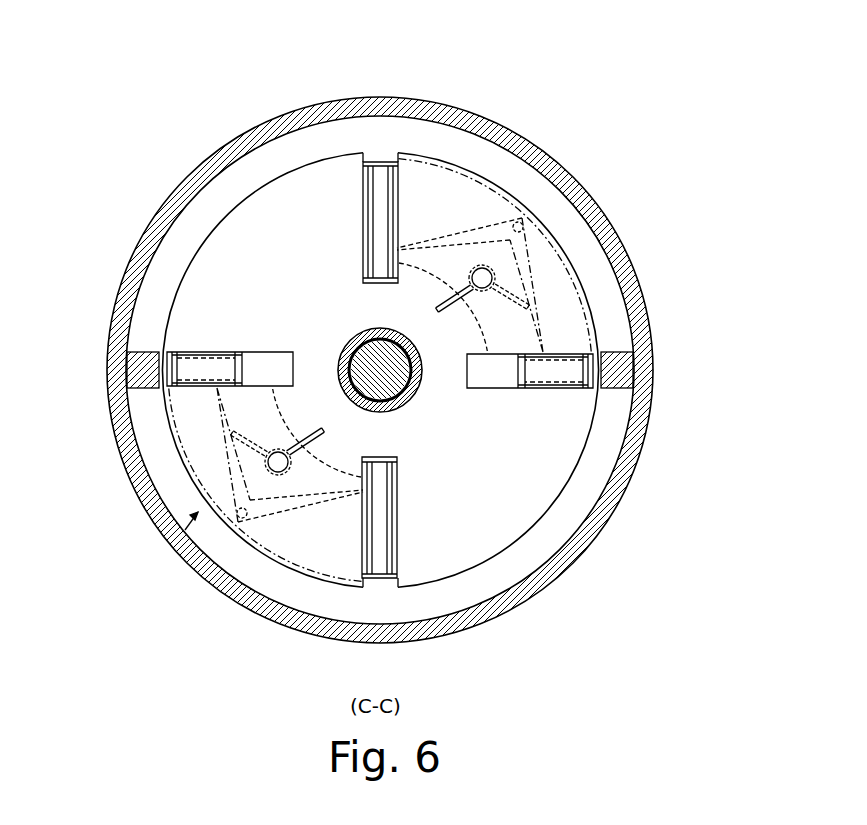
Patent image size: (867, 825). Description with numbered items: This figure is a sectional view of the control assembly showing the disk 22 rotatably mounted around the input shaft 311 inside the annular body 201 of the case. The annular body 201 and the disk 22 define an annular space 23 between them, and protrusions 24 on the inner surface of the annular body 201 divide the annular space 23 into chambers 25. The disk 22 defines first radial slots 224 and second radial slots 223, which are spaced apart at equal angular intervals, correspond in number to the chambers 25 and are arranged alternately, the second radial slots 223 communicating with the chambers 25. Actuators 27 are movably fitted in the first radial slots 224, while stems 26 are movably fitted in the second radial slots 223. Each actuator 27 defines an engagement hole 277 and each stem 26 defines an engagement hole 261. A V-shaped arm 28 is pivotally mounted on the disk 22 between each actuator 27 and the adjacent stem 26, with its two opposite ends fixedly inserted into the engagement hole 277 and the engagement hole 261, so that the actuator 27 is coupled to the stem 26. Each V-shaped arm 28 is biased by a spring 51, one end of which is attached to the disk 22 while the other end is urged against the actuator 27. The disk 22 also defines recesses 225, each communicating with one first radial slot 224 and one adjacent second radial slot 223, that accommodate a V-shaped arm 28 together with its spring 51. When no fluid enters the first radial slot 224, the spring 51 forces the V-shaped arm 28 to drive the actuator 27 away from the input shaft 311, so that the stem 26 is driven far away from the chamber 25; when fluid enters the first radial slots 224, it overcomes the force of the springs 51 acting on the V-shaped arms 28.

The annular body 201 is at (491, 620).
The disk 22 is at (185, 410).
The annular space 23 is at (178, 543).
The protrusion 24 is at (143, 358).
The chamber 25 is at (138, 265).
The stem 26 is at (367, 205).
The actuator 27 is at (162, 280).
The V-shaped arm 28 is at (458, 228).
The spring 51 is at (530, 305).
The second radial slot 223 is at (380, 157).
The first radial slot 224 is at (263, 363).
The recess 225 is at (444, 156).
The engagement hole 261 is at (398, 475).
The engagement hole 277 is at (547, 390).
The input shaft 311 is at (348, 340).